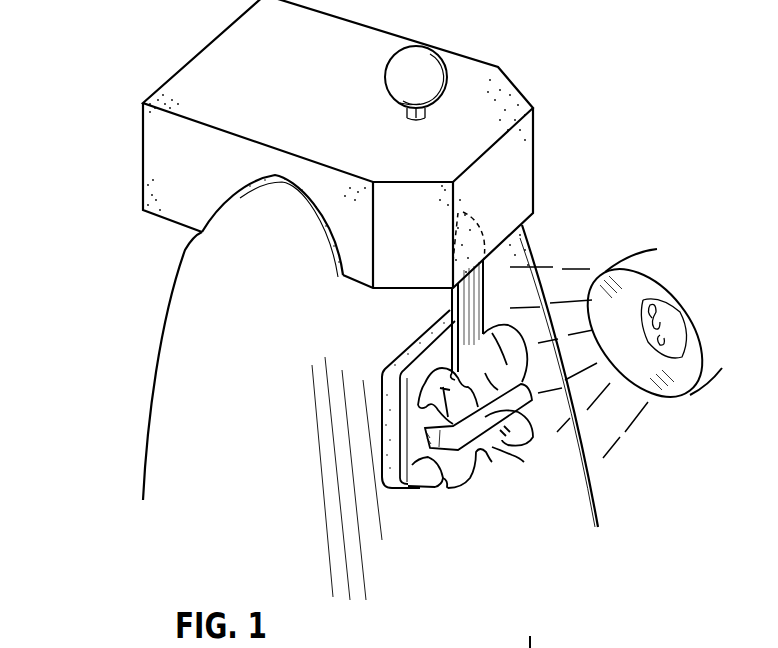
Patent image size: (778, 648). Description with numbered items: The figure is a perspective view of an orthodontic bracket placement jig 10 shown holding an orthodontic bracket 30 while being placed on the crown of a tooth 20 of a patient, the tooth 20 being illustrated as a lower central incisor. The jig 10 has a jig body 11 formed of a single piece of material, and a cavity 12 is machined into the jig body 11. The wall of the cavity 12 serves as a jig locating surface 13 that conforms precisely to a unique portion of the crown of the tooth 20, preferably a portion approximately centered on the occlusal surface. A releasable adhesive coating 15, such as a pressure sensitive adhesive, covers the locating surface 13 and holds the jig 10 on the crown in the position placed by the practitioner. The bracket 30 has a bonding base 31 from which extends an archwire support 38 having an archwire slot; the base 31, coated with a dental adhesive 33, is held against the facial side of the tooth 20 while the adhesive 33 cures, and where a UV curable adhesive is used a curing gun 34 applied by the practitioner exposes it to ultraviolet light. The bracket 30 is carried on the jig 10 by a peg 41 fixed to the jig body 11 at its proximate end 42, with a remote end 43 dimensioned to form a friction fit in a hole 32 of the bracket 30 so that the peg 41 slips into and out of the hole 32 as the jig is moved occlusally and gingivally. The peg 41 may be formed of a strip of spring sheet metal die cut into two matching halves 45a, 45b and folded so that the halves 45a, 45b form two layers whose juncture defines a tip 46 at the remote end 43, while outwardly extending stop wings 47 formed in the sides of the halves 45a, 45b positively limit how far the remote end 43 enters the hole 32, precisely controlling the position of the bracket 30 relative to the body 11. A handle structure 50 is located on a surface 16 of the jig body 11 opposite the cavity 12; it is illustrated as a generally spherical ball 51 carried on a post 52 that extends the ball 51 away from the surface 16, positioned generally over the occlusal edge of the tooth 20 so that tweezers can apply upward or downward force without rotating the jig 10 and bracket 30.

The positioning jig 10 is at (121, 228).
The jig body 11 is at (522, 83).
The cavity 12 is at (304, 205).
The jig locating surface 13 is at (284, 188).
The releasable adhesive coating 15 is at (322, 230).
The surface of the jig body 16 is at (276, 97).
The tooth 20 is at (150, 392).
The orthodontic bracket 30 is at (425, 488).
The bonding base 31 is at (405, 357).
The hole 32 is at (528, 408).
The dental adhesive 33 is at (378, 430).
The curing gun 34 is at (652, 250).
The archwire support 38 is at (446, 488).
The peg 41 is at (485, 273).
The proximate end 42 is at (483, 231).
The remote end 43 is at (495, 447).
The strip half 45a is at (448, 295).
The strip half 45b is at (480, 298).
The tip 46 is at (482, 462).
The stop wings 47 is at (480, 395).
The handle structure 50 is at (448, 65).
The ball 51 is at (388, 65).
The post 52 is at (410, 112).